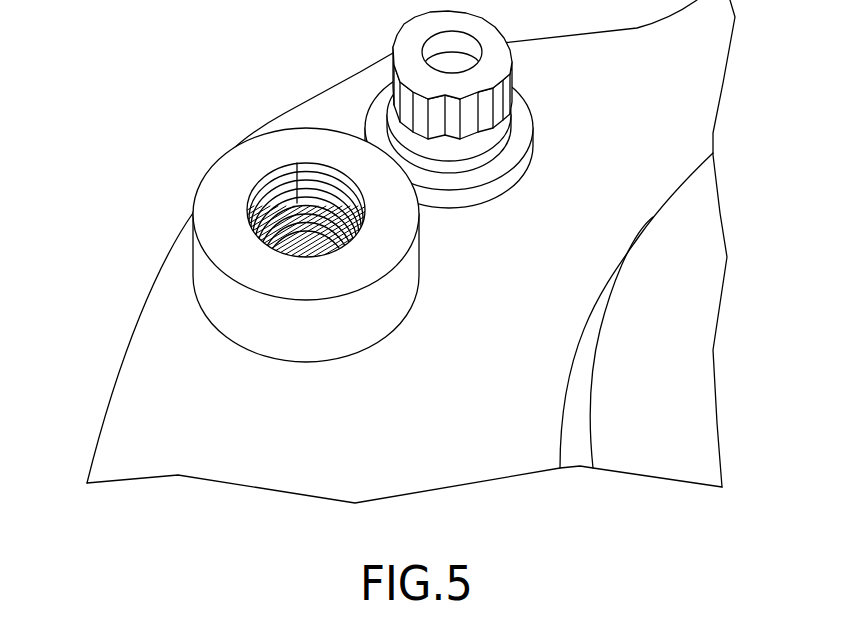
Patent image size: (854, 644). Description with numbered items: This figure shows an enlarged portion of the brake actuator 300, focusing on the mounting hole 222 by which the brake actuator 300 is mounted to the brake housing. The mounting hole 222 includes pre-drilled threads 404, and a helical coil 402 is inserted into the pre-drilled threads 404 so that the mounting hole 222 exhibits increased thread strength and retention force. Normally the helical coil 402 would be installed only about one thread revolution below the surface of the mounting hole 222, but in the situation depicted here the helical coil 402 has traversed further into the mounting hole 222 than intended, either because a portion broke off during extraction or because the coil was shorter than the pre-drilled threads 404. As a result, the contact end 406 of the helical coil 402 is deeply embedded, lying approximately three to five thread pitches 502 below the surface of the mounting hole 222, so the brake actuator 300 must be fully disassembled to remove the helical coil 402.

The brake actuator 300 is at (155, 92).
The mounting hole 222 is at (408, 233).
The helical coil 402 is at (325, 203).
The pre-drilled threads 404 is at (352, 172).
The contact end 406 is at (270, 213).
The thread pitches 502 is at (293, 180).